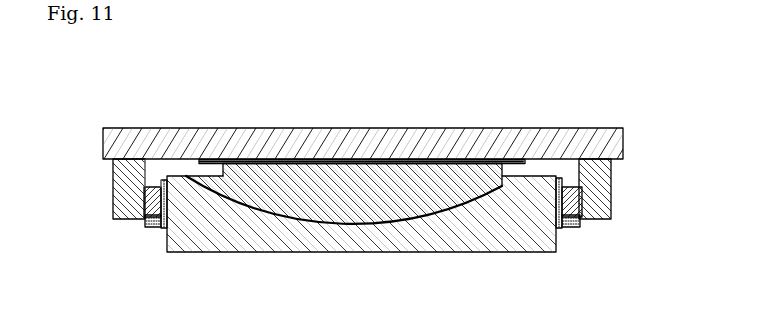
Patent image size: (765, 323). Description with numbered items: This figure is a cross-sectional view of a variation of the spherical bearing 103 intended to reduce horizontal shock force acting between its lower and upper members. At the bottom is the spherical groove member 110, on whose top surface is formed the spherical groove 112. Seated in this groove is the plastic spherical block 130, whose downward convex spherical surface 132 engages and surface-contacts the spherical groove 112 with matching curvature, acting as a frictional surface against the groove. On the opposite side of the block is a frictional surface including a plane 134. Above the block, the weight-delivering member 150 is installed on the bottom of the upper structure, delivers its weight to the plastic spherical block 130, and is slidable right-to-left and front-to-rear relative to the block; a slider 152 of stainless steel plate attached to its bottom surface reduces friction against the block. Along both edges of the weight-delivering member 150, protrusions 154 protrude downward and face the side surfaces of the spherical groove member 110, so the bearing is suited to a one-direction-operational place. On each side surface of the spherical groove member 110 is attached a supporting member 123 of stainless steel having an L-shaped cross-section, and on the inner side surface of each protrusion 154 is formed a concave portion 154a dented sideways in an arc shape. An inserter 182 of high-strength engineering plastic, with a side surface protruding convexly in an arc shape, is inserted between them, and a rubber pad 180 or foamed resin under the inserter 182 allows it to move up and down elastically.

The spherical bearing 103 is at (532, 102).
The spherical groove member 110 is at (358, 245).
The spherical groove 112 is at (428, 205).
The supporting member 123 is at (156, 228).
The plastic spherical block 130 is at (365, 185).
The convex spherical surface 132 is at (358, 205).
The plane 134 is at (336, 150).
The weight-delivering member 150 is at (440, 142).
The slider 152 is at (287, 160).
The protrusion 154 is at (125, 205).
The concave portion 154a is at (148, 199).
The rubber pad 180 is at (150, 219).
The inserter 182 is at (156, 187).